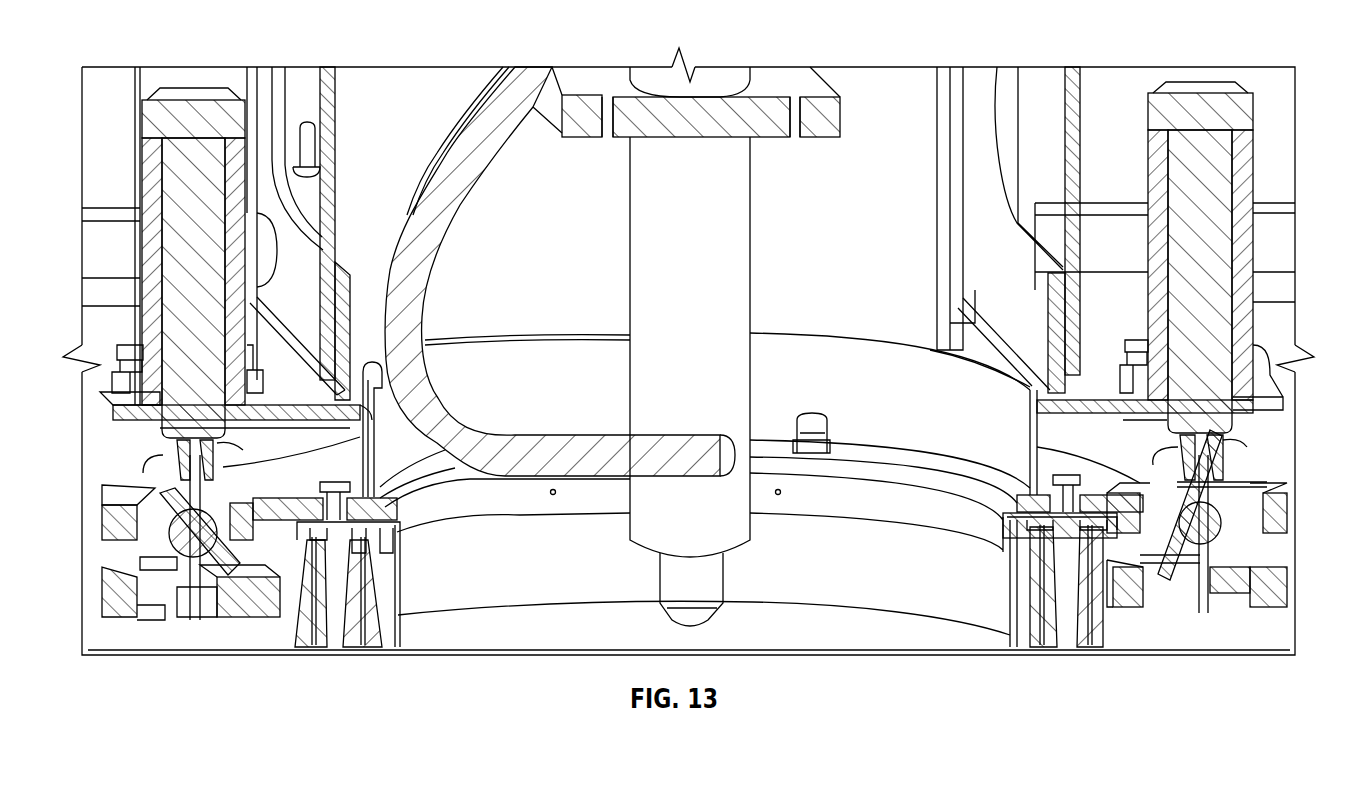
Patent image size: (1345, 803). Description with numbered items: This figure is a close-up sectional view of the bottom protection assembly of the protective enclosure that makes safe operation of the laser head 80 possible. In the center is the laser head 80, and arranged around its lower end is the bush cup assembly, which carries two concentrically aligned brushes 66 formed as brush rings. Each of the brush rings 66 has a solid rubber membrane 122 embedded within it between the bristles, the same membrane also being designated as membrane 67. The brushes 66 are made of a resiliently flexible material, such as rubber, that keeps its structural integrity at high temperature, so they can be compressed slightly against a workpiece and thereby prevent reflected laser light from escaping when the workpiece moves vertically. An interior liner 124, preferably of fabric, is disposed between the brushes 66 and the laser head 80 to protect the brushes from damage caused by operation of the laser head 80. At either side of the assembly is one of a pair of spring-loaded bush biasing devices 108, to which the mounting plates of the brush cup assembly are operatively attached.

The spring-loaded bush biasing device 108 is at (1237, 212).
The laser head 80 is at (706, 318).
The brush 66 is at (287, 622).
The solid rubber membrane 67 is at (393, 612).
The solid rubber membrane 122 is at (1088, 627).
The interior liner 124 is at (1008, 567).